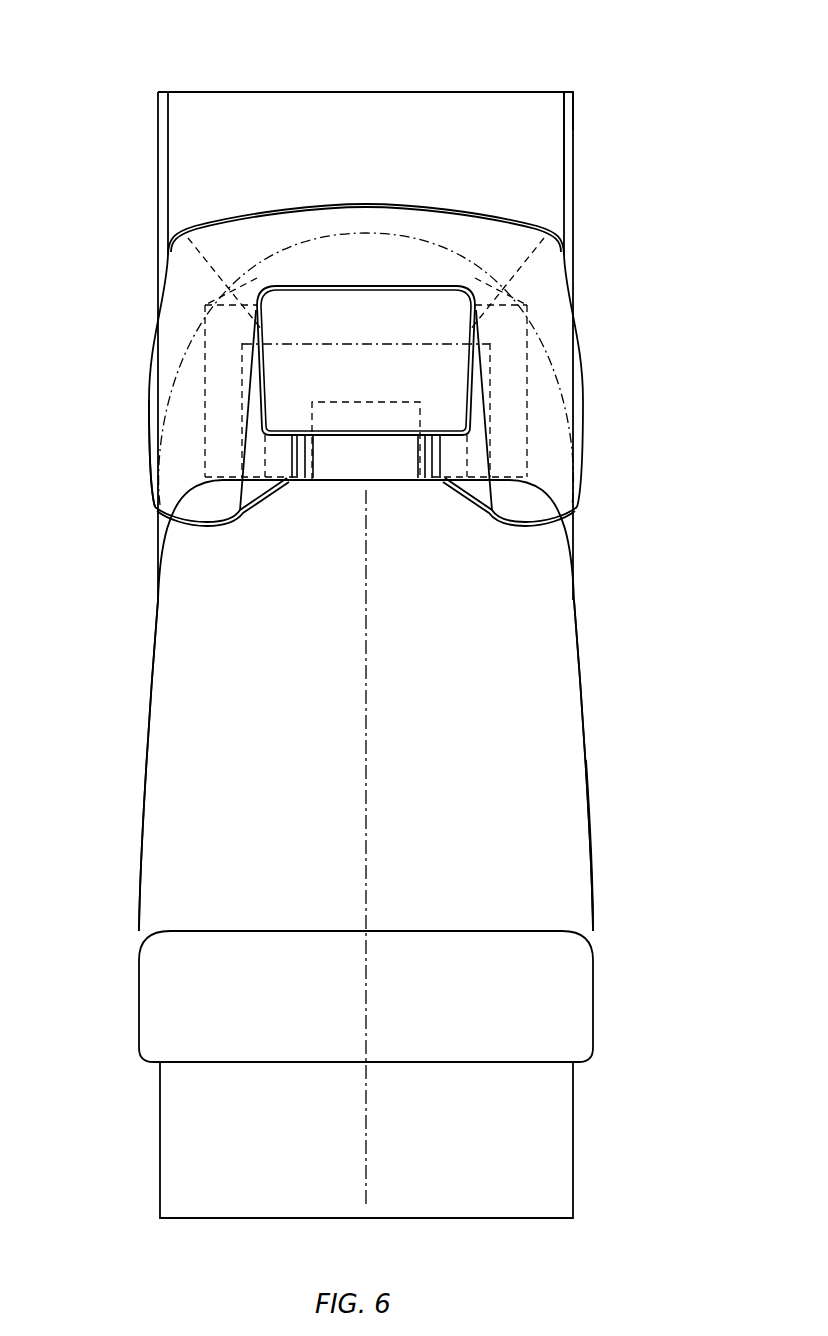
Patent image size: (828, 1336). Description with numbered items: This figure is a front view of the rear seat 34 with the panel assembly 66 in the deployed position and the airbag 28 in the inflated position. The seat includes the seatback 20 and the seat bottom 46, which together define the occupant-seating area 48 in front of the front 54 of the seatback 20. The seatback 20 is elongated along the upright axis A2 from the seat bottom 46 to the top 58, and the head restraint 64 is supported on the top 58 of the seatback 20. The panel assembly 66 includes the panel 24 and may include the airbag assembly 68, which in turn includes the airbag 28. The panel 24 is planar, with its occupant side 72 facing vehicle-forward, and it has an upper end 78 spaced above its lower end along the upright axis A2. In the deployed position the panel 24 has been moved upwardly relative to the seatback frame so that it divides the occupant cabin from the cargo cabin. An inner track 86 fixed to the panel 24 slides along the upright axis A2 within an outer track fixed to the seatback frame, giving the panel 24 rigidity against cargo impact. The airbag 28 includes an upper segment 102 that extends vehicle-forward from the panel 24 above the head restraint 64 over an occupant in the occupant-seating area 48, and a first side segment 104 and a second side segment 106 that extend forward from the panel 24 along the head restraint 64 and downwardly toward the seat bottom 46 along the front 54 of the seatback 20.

The seatback 20 is at (606, 693).
The panel 24 is at (535, 90).
The airbag 28 is at (150, 425).
The rear seat 34 is at (596, 816).
The seat bottom 46 is at (596, 1006).
The occupant-seating area 48 is at (186, 830).
The front 54 is at (520, 582).
The top 58 is at (392, 470).
The head restraint 64 is at (345, 440).
The panel assembly 66 is at (296, 62).
The airbag assembly 68 is at (136, 323).
The occupant side 72 is at (226, 113).
The upper end 78 is at (507, 94).
The inner track 86 is at (155, 160).
The upper segment 102 is at (382, 220).
The first side segment 104 is at (507, 343).
The second side segment 106 is at (218, 330).
The upright axis A2 is at (370, 668).